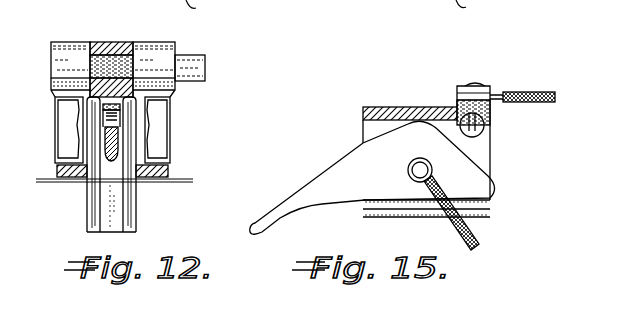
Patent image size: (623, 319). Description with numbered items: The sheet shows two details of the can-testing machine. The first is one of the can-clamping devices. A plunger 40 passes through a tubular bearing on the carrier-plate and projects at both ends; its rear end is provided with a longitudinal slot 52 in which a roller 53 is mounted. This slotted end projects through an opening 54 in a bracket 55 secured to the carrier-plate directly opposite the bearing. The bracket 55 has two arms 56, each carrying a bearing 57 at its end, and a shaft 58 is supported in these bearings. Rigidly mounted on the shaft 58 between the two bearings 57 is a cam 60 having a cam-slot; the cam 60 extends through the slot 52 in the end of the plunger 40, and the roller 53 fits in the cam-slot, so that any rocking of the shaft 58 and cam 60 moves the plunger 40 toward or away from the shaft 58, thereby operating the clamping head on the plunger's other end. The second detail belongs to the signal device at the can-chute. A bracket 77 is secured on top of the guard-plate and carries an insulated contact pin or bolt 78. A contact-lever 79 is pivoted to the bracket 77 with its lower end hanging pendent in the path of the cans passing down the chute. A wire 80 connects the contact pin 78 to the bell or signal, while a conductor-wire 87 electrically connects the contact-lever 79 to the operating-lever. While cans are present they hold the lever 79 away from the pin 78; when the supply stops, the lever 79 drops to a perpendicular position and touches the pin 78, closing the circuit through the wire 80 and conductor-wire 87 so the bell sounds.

In FIG. 12, the plunger 40 is at (115, 215).
In FIG. 12, the longitudinal slot 52 is at (118, 152).
In FIG. 12, the roller 53 is at (118, 111).
In FIG. 12, the opening 54 is at (170, 176).
In FIG. 12, the bracket 55 is at (58, 171).
In FIG. 12, the arms 56 is at (63, 120).
In FIG. 12, the bearing 57 is at (72, 62).
In FIG. 12, the shaft 58 is at (183, 65).
In FIG. 12, the cam 60 is at (115, 42).
In FIG. 15, the bracket 77 is at (414, 107).
In FIG. 15, the contact pin or bolt 78 is at (478, 130).
In FIG. 15, the contact-lever 79 is at (372, 177).
In FIG. 15, the wire 80 is at (520, 92).
In FIG. 15, the conductor-wire 87 is at (470, 230).